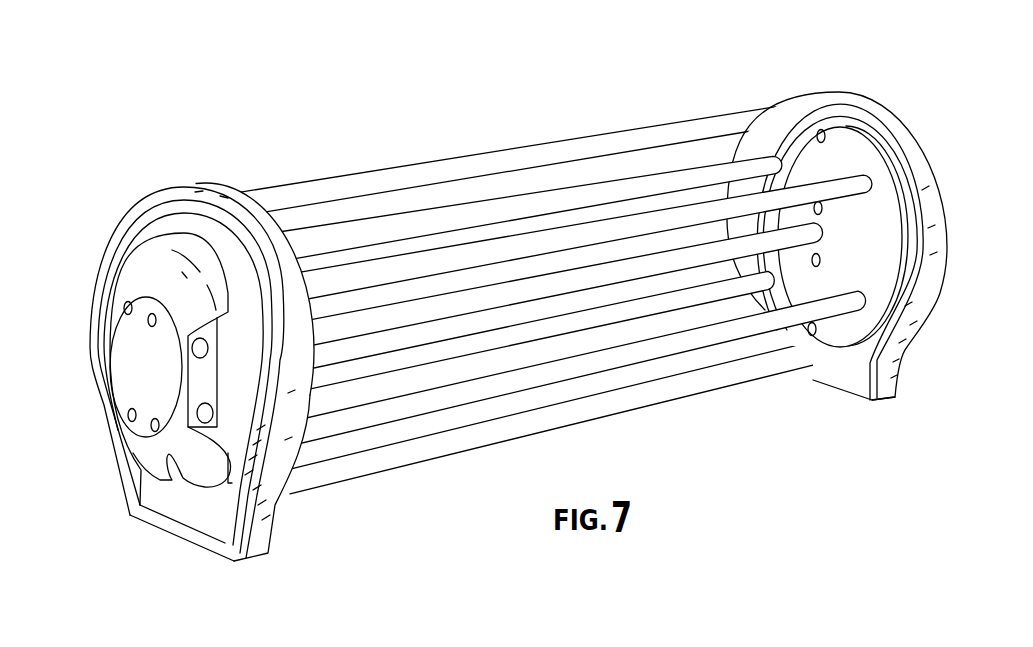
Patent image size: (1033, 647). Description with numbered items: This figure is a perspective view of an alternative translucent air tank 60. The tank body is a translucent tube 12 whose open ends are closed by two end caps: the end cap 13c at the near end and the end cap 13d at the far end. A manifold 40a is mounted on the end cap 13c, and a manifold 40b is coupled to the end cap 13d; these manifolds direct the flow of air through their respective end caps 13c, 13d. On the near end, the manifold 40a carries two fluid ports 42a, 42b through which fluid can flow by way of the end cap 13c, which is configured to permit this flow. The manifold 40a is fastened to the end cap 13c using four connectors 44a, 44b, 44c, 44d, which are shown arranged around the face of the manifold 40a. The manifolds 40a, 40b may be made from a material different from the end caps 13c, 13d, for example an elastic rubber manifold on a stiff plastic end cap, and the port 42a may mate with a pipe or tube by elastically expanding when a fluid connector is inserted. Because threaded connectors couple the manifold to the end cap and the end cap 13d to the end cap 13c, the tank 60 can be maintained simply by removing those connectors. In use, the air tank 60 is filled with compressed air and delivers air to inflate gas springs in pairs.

The translucent tube 12 is at (459, 165).
The end cap 13c is at (186, 186).
The end cap 13d is at (833, 86).
The manifold 40a is at (127, 277).
The manifold 40b is at (843, 236).
The fluid port 42a is at (208, 348).
The fluid port 42b is at (212, 413).
The connector 44a is at (126, 306).
The connector 44b is at (150, 323).
The connector 44c is at (152, 430).
The connector 44d is at (130, 417).
The air tank 60 is at (271, 98).